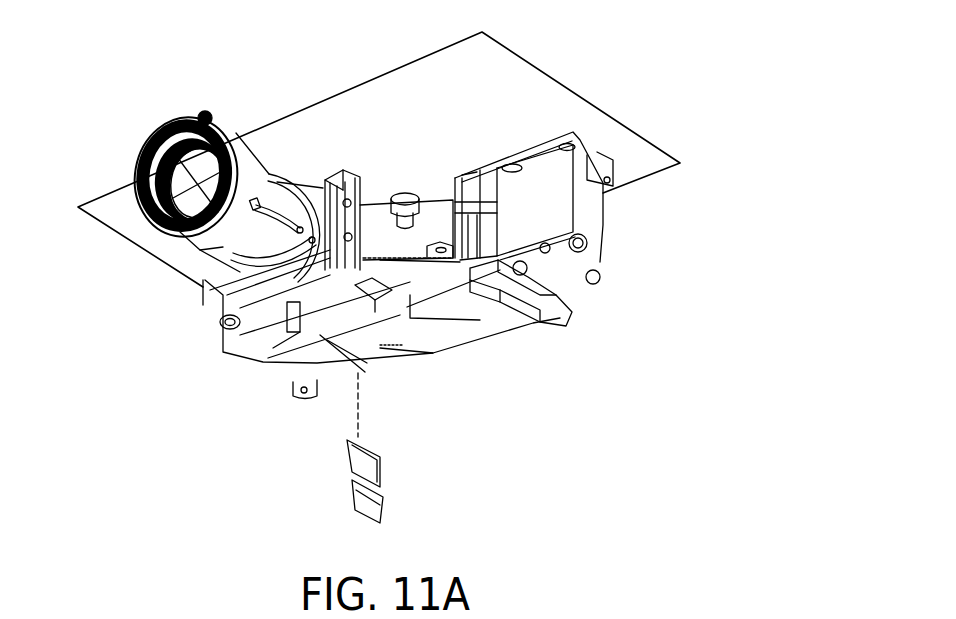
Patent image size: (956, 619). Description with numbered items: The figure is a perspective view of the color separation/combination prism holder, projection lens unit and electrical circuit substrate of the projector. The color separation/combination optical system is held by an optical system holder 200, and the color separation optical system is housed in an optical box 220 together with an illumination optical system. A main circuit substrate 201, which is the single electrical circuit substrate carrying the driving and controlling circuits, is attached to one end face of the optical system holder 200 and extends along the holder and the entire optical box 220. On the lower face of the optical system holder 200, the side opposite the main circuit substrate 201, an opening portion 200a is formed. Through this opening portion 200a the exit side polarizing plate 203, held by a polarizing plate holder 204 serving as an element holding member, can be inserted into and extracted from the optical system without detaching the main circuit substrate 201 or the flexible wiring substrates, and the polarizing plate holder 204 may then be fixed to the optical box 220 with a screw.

The main circuit substrate 201 is at (508, 78).
The optical system holder 200 is at (308, 330).
The opening portion 200a is at (373, 297).
The optical box 220 is at (465, 320).
The polarizing plate holder 204 is at (383, 468).
The exit side polarizing plate 203 is at (373, 473).